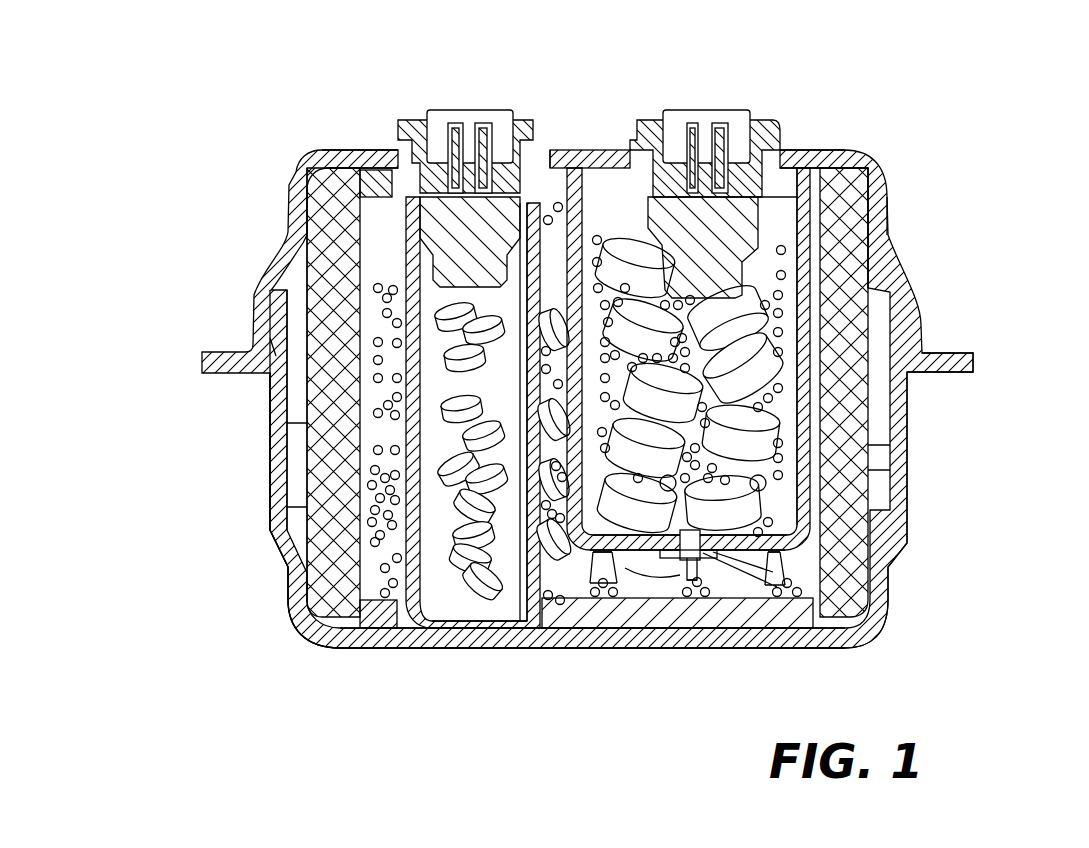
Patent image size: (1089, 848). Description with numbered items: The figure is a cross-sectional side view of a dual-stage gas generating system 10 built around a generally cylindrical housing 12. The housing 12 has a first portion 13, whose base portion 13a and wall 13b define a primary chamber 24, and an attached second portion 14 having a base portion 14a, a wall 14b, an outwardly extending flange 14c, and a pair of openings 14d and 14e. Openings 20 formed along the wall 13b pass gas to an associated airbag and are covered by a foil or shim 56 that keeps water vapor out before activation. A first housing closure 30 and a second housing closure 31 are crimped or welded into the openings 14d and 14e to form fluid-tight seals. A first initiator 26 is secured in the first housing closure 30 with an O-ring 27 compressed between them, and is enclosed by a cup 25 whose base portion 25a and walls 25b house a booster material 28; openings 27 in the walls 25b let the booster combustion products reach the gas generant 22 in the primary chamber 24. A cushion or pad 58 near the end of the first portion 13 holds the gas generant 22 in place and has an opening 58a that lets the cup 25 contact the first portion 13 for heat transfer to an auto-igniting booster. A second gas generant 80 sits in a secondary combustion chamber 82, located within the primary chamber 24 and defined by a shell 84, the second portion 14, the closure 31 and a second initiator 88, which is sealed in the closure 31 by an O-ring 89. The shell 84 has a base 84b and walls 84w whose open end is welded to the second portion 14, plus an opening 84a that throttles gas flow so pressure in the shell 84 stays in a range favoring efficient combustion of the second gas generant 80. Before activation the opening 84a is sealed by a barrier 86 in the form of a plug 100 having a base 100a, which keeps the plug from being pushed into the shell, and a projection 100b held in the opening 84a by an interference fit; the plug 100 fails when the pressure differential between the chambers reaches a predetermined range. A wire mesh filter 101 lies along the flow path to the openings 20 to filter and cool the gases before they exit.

The gas generating system 10 is at (678, 510).
The housing 12 is at (265, 545).
The first portion 13 is at (296, 590).
The base portion 13a is at (358, 640).
The wall 13b is at (278, 413).
The second portion 14 is at (333, 147).
The base portion 14a is at (590, 147).
The wall 14b is at (878, 212).
The flange 14c is at (950, 362).
The opening 14d is at (546, 152).
The opening 14e is at (786, 152).
The openings 20 is at (278, 468).
The gas generant 22 is at (650, 568).
The primary chamber 24 is at (362, 235).
The cup 25 is at (420, 623).
The base portion 25a is at (467, 625).
The wall 25b is at (412, 352).
The first initiator 26 is at (453, 135).
The O-ring 27 is at (517, 213).
The booster material 28 is at (482, 577).
The first housing closure 30 is at (521, 108).
The second housing closure 31 is at (768, 127).
The foil 56 is at (285, 492).
The pad 58 is at (583, 610).
The opening 58a is at (400, 622).
The second gas generant composition 80 is at (740, 435).
The secondary combustion chamber 82 is at (800, 222).
The shell 84 is at (805, 390).
The opening 84a is at (790, 566).
The base 84b is at (618, 542).
The wall 84w is at (805, 288).
The barrier 86 is at (690, 533).
The second initiator 88 is at (692, 127).
The O-ring 89 is at (783, 233).
The plug 100 is at (690, 547).
The base 100a is at (678, 575).
The projection 100b is at (714, 551).
The filter 101 is at (332, 258).